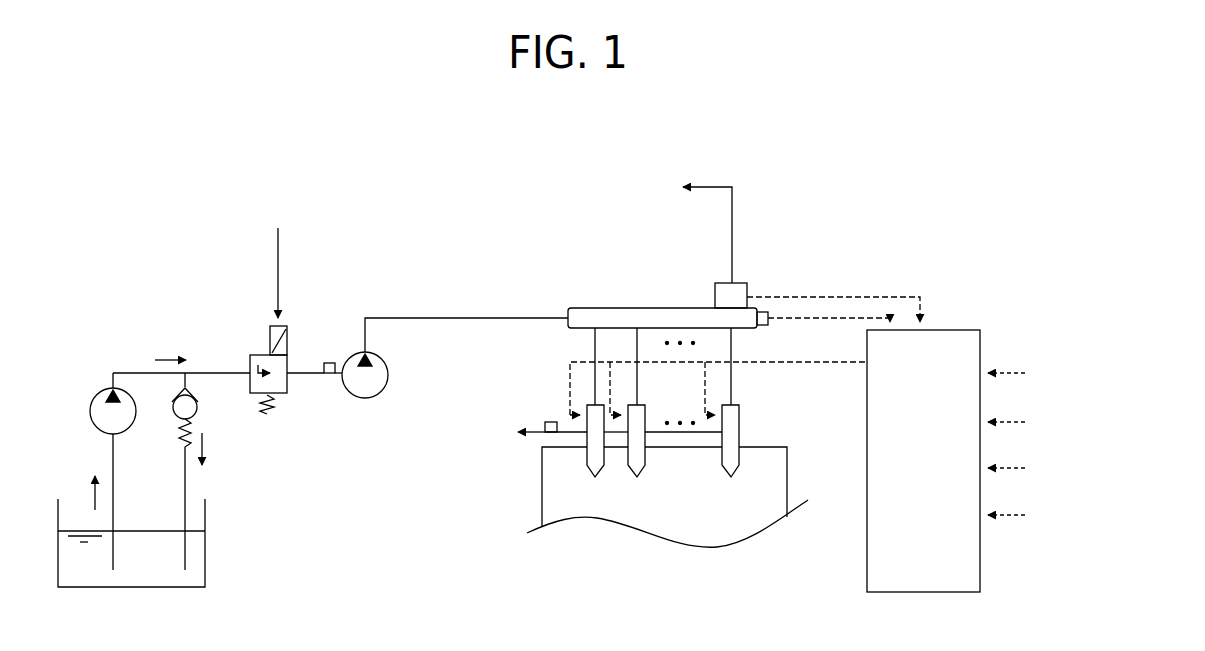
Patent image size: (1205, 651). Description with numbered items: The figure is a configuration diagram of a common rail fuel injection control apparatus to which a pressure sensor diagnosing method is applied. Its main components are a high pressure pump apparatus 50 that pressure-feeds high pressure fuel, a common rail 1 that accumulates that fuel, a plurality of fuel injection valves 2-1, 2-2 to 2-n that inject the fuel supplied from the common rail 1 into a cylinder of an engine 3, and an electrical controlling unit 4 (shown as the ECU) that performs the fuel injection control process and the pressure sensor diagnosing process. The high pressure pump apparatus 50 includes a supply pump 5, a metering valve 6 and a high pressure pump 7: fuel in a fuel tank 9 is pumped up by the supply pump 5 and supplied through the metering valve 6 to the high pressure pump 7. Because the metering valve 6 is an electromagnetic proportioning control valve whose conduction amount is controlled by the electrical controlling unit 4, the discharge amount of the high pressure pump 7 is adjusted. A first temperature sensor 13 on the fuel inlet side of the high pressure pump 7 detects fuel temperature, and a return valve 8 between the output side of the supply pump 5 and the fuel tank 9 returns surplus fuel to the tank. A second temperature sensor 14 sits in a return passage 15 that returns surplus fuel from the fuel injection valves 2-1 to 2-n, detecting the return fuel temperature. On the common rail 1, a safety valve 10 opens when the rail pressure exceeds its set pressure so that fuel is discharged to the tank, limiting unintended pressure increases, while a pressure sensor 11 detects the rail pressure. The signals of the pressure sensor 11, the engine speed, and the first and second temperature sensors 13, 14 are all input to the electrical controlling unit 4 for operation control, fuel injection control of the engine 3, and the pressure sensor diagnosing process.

The high pressure pump apparatus 50 is at (210, 316).
The common rail 1 is at (655, 306).
The fuel injection valve 2-1 is at (597, 478).
The fuel injection valve 2-2 is at (640, 478).
The fuel injection valve 2-n is at (733, 478).
The engine 3 is at (787, 472).
The electrical controlling unit 4 is at (942, 342).
The supply pump 5 is at (90, 407).
The metering valve 6 is at (288, 380).
The high pressure pump 7 is at (388, 375).
The return valve 8 is at (197, 410).
The fuel tank 9 is at (207, 550).
The safety valve 10 is at (736, 290).
The pressure sensor 11 is at (768, 326).
The first temperature sensor 13 is at (328, 362).
The second temperature sensor 14 is at (551, 420).
The return passage 15 is at (530, 437).